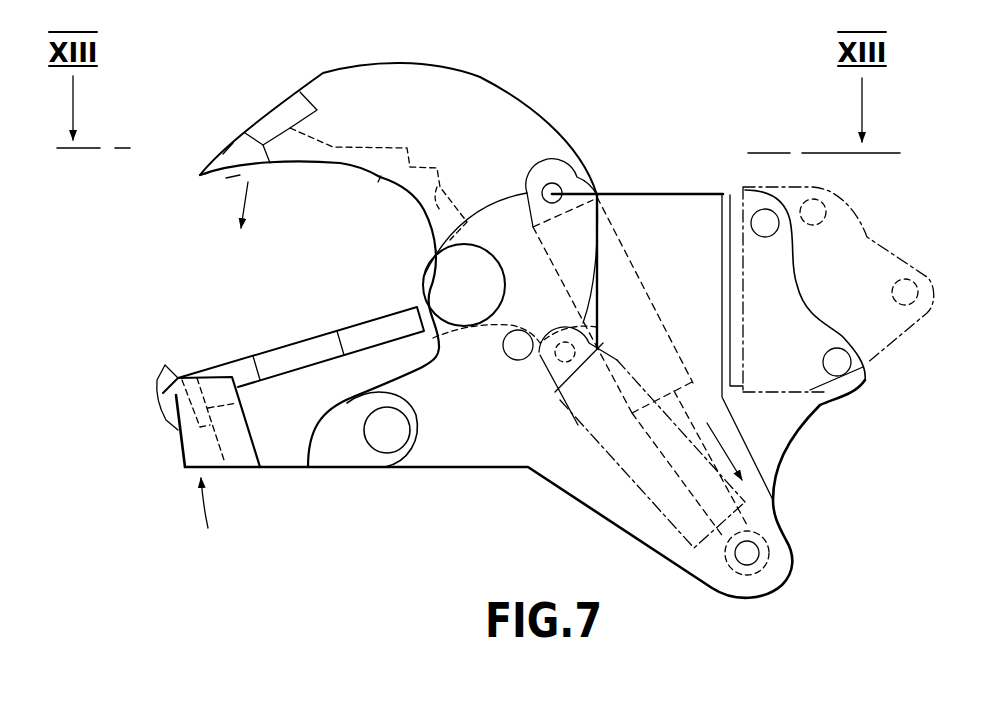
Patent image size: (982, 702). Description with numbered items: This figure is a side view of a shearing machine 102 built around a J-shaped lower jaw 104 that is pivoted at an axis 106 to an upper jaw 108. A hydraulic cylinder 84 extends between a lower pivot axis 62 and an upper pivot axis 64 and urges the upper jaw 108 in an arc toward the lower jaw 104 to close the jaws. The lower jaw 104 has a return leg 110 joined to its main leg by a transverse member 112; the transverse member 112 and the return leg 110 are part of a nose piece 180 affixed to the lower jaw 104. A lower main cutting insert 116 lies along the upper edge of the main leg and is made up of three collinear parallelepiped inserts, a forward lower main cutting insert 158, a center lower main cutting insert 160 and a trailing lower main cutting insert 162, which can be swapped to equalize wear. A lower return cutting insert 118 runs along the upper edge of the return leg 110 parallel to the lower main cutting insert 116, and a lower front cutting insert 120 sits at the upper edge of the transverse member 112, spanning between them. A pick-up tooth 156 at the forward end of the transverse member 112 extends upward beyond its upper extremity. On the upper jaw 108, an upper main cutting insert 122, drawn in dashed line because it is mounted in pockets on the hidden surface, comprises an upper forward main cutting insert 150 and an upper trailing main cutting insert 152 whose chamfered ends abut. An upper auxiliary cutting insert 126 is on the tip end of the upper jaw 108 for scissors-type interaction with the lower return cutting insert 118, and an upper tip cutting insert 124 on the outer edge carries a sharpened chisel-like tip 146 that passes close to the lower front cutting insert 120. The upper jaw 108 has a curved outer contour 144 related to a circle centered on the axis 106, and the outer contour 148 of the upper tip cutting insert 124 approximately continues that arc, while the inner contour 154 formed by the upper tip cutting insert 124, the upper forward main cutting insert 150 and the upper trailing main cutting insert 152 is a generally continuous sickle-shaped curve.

The shearing machine 102 is at (617, 82).
The lower jaw 104 is at (303, 471).
The axis 106 is at (436, 270).
The upper jaw 108 is at (432, 66).
The return leg 110 is at (240, 460).
The transverse member 112 is at (187, 450).
The lower main cutting insert 116 is at (284, 348).
The lower return cutting insert 118 is at (222, 366).
The lower front cutting insert 120 is at (182, 378).
The upper main cutting insert 122 is at (338, 142).
The upper tip cutting insert 124 is at (232, 180).
The upper auxiliary cutting insert 126 is at (263, 116).
The curved outer contour 144 is at (340, 83).
The tip 146 is at (200, 176).
The outer contour 148 is at (223, 154).
The upper forward main cutting insert 150 is at (342, 164).
The upper trailing main cutting insert 152 is at (437, 187).
The inner contour 154 is at (378, 182).
The pick-up tooth 156 is at (160, 378).
The forward lower main cutting insert 158 is at (252, 355).
The center lower main cutting insert 160 is at (244, 227).
The trailing lower main cutting insert 162 is at (364, 322).
The nose piece 180 is at (219, 516).
The lower pivot axis 62 is at (768, 540).
The upper pivot axis 64 is at (583, 172).
The hydraulic cylinder 84 is at (633, 266).